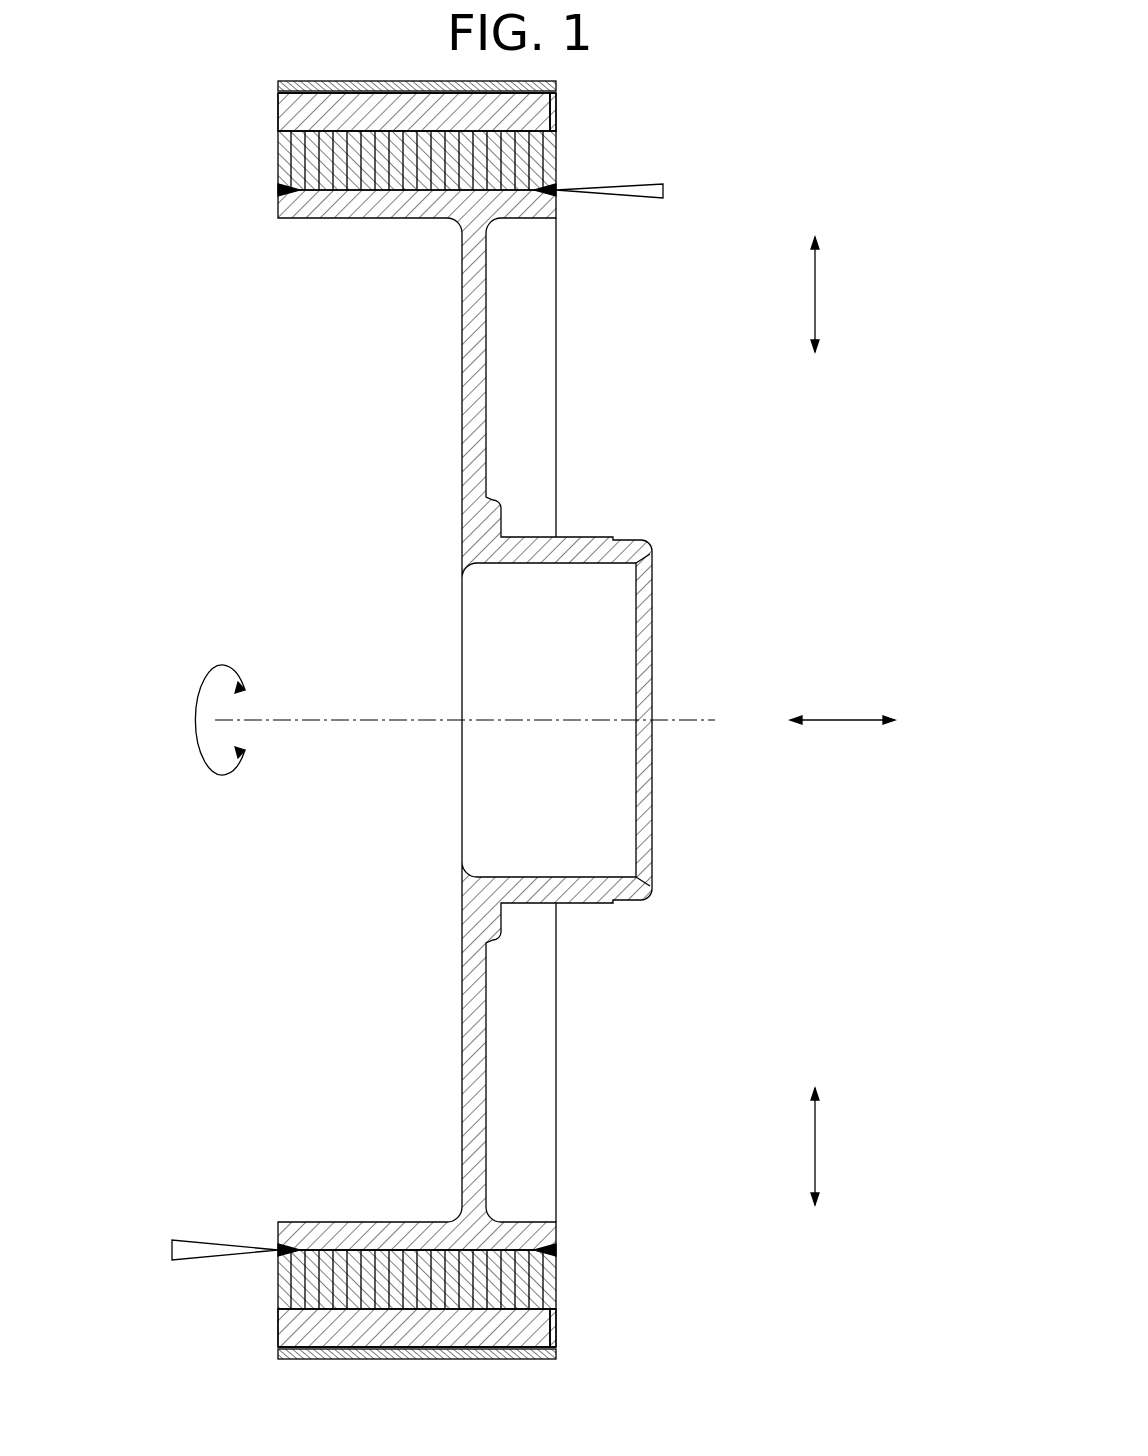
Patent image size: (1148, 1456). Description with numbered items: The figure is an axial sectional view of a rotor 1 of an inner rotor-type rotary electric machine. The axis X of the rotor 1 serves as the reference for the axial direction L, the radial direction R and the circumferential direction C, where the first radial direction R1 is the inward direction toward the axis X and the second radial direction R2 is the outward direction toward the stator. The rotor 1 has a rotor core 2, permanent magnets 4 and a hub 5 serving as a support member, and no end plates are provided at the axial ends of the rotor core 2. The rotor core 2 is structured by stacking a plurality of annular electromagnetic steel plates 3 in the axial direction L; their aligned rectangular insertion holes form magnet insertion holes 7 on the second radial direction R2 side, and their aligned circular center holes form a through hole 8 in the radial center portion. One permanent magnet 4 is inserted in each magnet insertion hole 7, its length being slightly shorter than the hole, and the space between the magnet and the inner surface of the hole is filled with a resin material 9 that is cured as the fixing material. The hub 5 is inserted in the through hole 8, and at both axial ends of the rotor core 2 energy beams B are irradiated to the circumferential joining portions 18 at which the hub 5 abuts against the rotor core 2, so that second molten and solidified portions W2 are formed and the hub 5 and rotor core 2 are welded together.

The rotor 1 is at (784, 101).
The rotor core 2 is at (268, 163).
The electromagnetic steel plates 3 is at (545, 85).
The permanent magnets 4 is at (278, 105).
The hub 5 is at (490, 398).
The magnet insertion holes 7 is at (278, 122).
The through hole 8 is at (330, 1248).
The resin material 9 is at (558, 96).
The joining portions 18 is at (262, 200).
The second molten and solidified portions W2 is at (280, 195).
The energy beams B is at (645, 185).
The axis X is at (475, 720).
The circumferential direction C is at (204, 720).
The axial direction L is at (842, 704).
The radial direction R is at (830, 721).
The first radial direction R1 is at (815, 721).
The second radial direction R2 is at (815, 721).